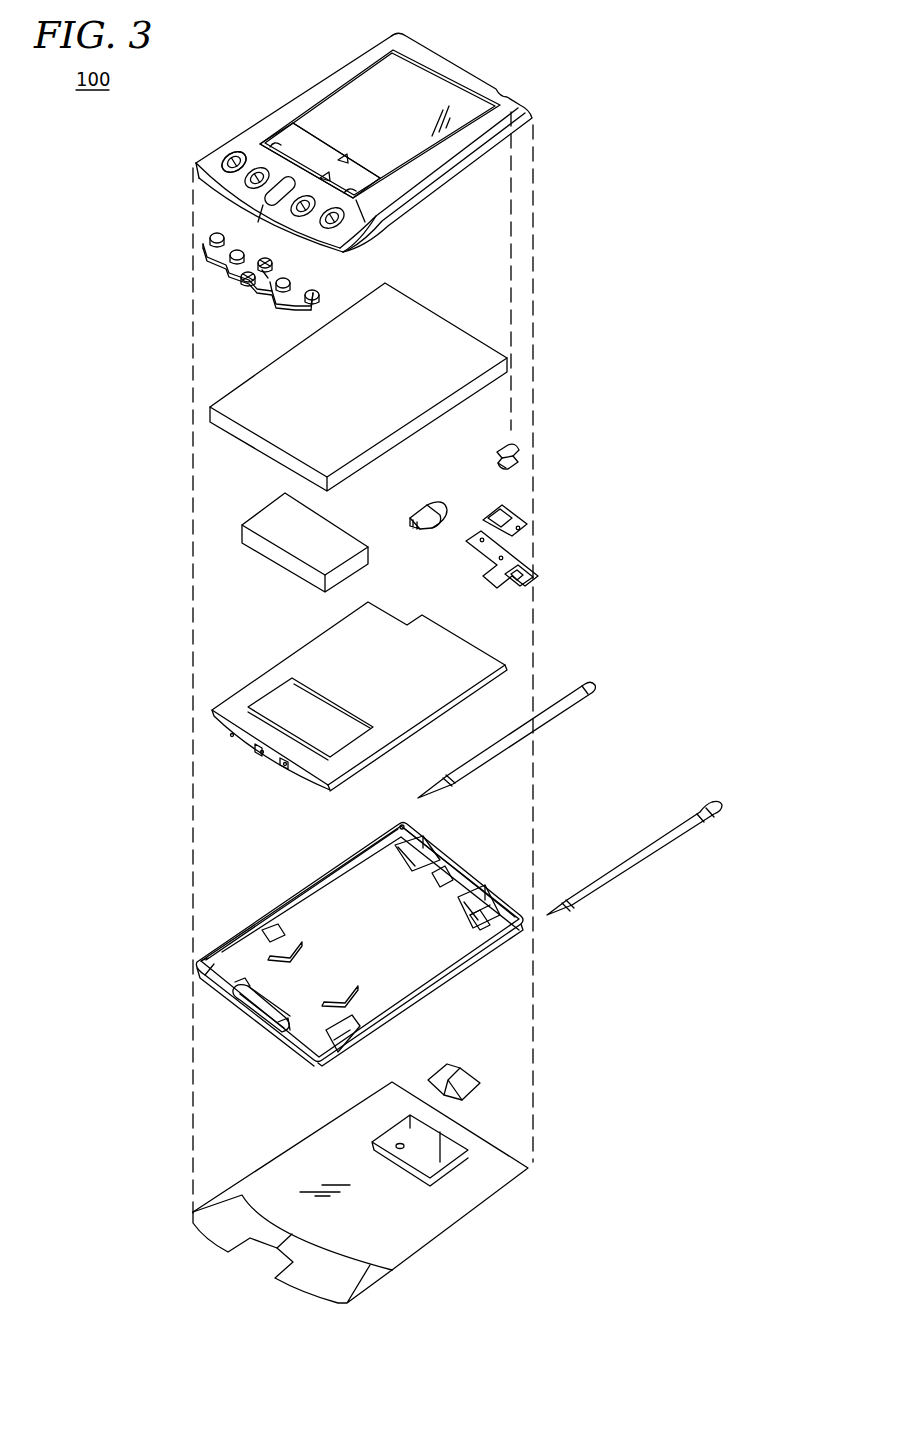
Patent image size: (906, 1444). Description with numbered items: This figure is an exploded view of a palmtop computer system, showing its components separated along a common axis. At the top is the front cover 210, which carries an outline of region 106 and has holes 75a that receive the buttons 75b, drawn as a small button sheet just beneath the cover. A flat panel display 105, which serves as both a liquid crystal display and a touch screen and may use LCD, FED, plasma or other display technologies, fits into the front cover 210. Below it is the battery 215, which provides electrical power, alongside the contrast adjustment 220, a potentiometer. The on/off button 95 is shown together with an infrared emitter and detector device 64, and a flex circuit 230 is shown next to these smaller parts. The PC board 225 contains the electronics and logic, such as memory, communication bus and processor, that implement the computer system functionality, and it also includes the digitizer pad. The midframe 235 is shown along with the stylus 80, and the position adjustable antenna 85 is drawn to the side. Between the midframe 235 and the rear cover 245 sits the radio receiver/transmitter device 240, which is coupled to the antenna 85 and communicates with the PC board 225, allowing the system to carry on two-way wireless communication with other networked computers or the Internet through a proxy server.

The front cover 210 is at (534, 113).
The region 106 is at (294, 141).
The holes 75a is at (232, 161).
The buttons 75b is at (211, 238).
The flat panel display 105 is at (218, 398).
The battery 215 is at (247, 515).
The contrast adjustment 220 is at (429, 500).
The on/off button 95 is at (522, 453).
The infrared emitter and detector device 64 is at (510, 517).
The flex circuit 230 is at (527, 569).
The PC board 225 is at (213, 700).
The position adjustable antenna 85 is at (602, 682).
The stylus 80 is at (717, 792).
The midframe 235 is at (494, 957).
The radio receiver/transmitter device 240 is at (463, 1072).
The rear cover 245 is at (492, 1198).